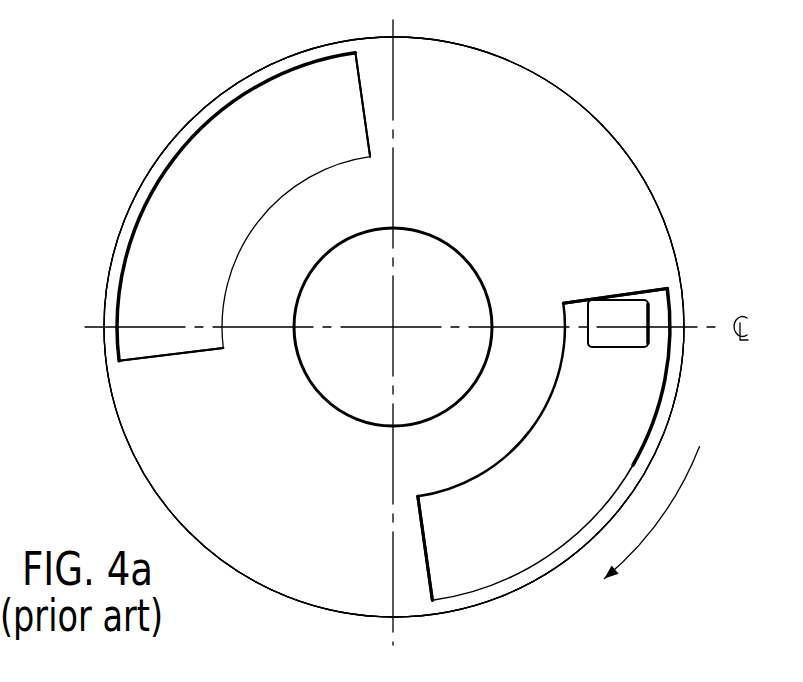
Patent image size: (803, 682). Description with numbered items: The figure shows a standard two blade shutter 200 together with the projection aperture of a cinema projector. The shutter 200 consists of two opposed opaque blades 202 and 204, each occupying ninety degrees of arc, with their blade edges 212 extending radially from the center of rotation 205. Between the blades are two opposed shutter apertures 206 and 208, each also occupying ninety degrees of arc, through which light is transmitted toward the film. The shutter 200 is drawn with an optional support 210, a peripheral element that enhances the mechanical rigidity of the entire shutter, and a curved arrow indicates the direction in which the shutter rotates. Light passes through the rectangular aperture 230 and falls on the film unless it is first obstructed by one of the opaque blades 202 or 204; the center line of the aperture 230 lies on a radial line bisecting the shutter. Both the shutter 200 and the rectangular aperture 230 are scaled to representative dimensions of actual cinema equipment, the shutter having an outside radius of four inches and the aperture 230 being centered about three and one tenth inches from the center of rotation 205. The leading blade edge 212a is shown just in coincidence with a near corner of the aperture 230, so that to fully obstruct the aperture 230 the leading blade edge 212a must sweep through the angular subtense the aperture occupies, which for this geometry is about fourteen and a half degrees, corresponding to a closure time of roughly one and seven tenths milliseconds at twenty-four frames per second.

The two blade shutter 200 is at (625, 67).
The opaque blade 202 is at (460, 67).
The opaque blade 204 is at (143, 443).
The center of rotation 205 is at (390, 328).
The shutter aperture 206 is at (177, 193).
The shutter aperture 208 is at (463, 572).
The support 210 is at (118, 247).
The blade edge 212 is at (363, 98).
The leading blade edge 212a is at (643, 288).
The rectangular aperture 230 is at (637, 340).